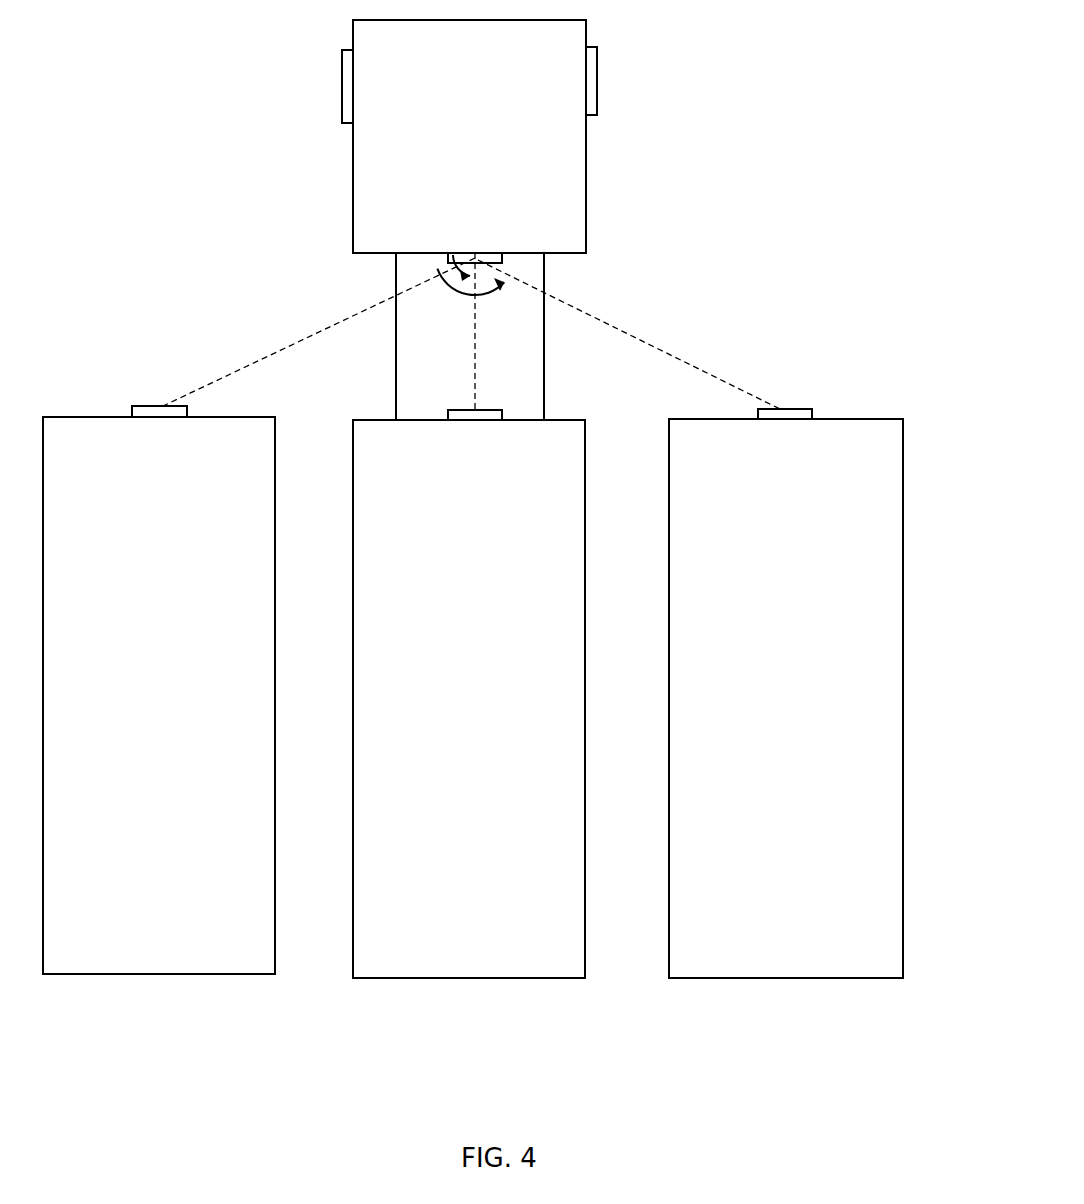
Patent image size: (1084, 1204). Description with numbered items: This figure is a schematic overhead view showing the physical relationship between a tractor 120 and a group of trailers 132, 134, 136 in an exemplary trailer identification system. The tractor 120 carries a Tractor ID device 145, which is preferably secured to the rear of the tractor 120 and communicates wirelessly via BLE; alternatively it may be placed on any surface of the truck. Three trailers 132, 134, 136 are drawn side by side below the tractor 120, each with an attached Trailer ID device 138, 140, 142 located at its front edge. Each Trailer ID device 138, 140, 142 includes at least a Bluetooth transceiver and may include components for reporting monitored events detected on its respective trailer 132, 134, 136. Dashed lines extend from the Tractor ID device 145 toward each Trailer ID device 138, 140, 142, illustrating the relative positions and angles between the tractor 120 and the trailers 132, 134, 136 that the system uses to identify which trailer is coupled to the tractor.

The tractor 120 is at (560, 180).
The Tractor ID device 145 is at (503, 262).
The trailer 132 is at (83, 425).
The trailer 134 is at (540, 443).
The trailer 136 is at (875, 512).
The Trailer ID device 138 is at (145, 405).
The Trailer ID device 140 is at (465, 418).
The Trailer ID device 142 is at (778, 417).